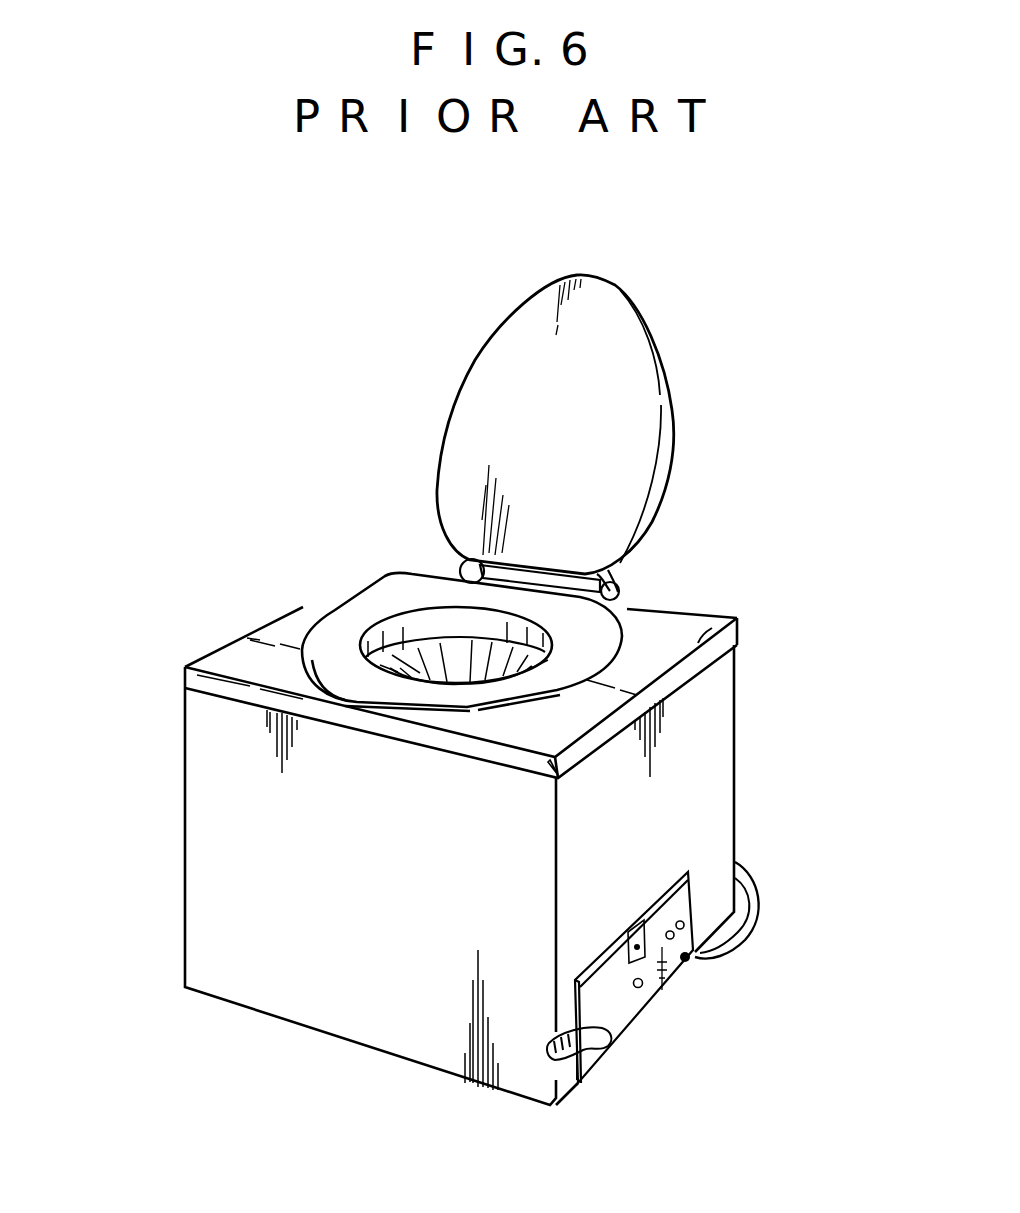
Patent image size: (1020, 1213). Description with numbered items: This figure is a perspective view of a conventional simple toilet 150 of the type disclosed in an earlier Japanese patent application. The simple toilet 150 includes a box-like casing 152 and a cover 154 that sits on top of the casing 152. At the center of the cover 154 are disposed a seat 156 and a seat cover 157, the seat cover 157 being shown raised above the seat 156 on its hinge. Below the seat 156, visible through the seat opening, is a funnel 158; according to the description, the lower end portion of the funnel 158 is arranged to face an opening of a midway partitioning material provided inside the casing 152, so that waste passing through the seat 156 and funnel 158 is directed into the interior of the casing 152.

The simple toilet 150 is at (746, 731).
The casing 152 is at (185, 915).
The cover 154 is at (712, 628).
The seat 156 is at (345, 636).
The seat cover 157 is at (672, 437).
The funnel 158 is at (440, 653).